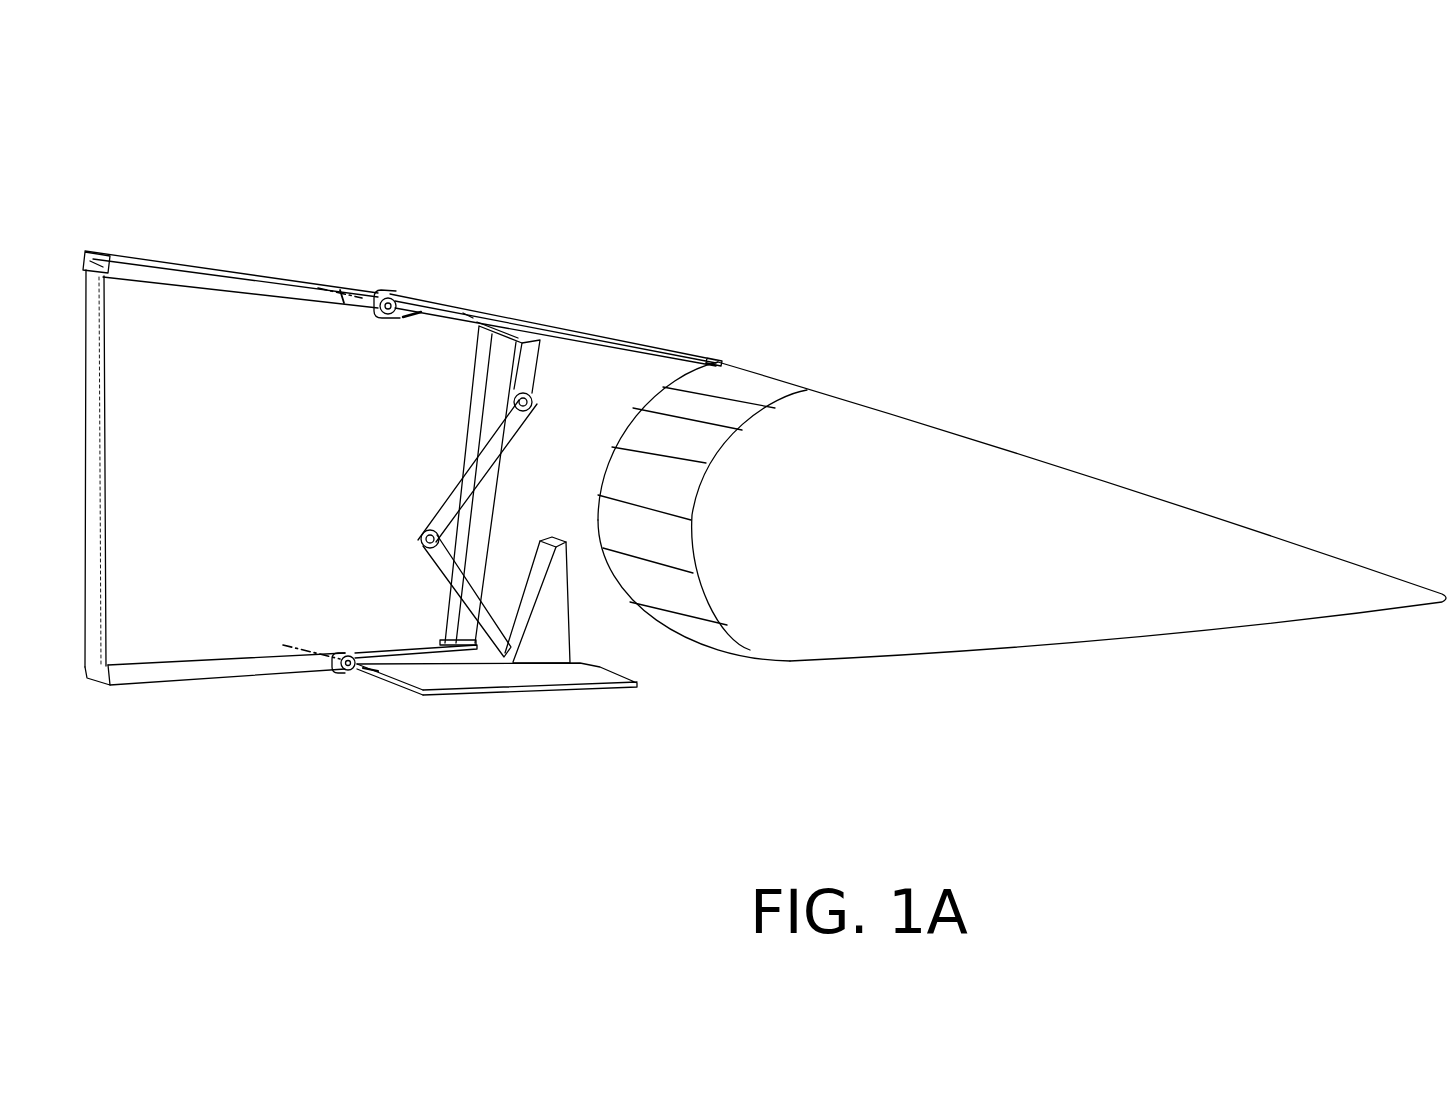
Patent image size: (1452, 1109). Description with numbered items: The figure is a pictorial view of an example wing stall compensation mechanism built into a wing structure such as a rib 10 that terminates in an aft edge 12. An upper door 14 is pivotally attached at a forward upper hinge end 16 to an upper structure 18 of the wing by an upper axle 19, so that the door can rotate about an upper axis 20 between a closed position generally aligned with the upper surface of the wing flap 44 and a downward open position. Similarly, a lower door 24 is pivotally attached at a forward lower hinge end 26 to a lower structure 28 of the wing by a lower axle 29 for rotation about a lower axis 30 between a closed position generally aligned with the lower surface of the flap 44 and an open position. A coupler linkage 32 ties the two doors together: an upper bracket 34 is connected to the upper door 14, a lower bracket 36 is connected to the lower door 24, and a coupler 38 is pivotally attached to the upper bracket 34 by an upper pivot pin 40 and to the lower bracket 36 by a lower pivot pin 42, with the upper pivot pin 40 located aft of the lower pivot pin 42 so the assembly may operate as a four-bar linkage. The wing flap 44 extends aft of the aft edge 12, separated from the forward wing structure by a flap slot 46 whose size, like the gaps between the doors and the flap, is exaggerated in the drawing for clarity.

The rib 10 is at (205, 333).
The aft edge 12 is at (475, 398).
The upper door 14 is at (614, 334).
The forward upper hinge end 16 is at (387, 300).
The upper structure 18 is at (342, 300).
The upper axle 19 is at (391, 302).
The upper axis 20 is at (418, 313).
The lower door 24 is at (478, 692).
The forward lower hinge end 26 is at (342, 667).
The lower structure 28 is at (266, 665).
The lower axle 29 is at (347, 660).
The lower axis 30 is at (378, 673).
The coupler linkage 32 is at (560, 490).
The upper bracket 34 is at (478, 327).
The lower bracket 36 is at (463, 596).
The coupler 38 is at (470, 484).
The upper pivot pin 40 is at (530, 405).
The lower pivot pin 42 is at (430, 533).
The wing flap 44 is at (923, 519).
The flap slot 46 is at (598, 597).